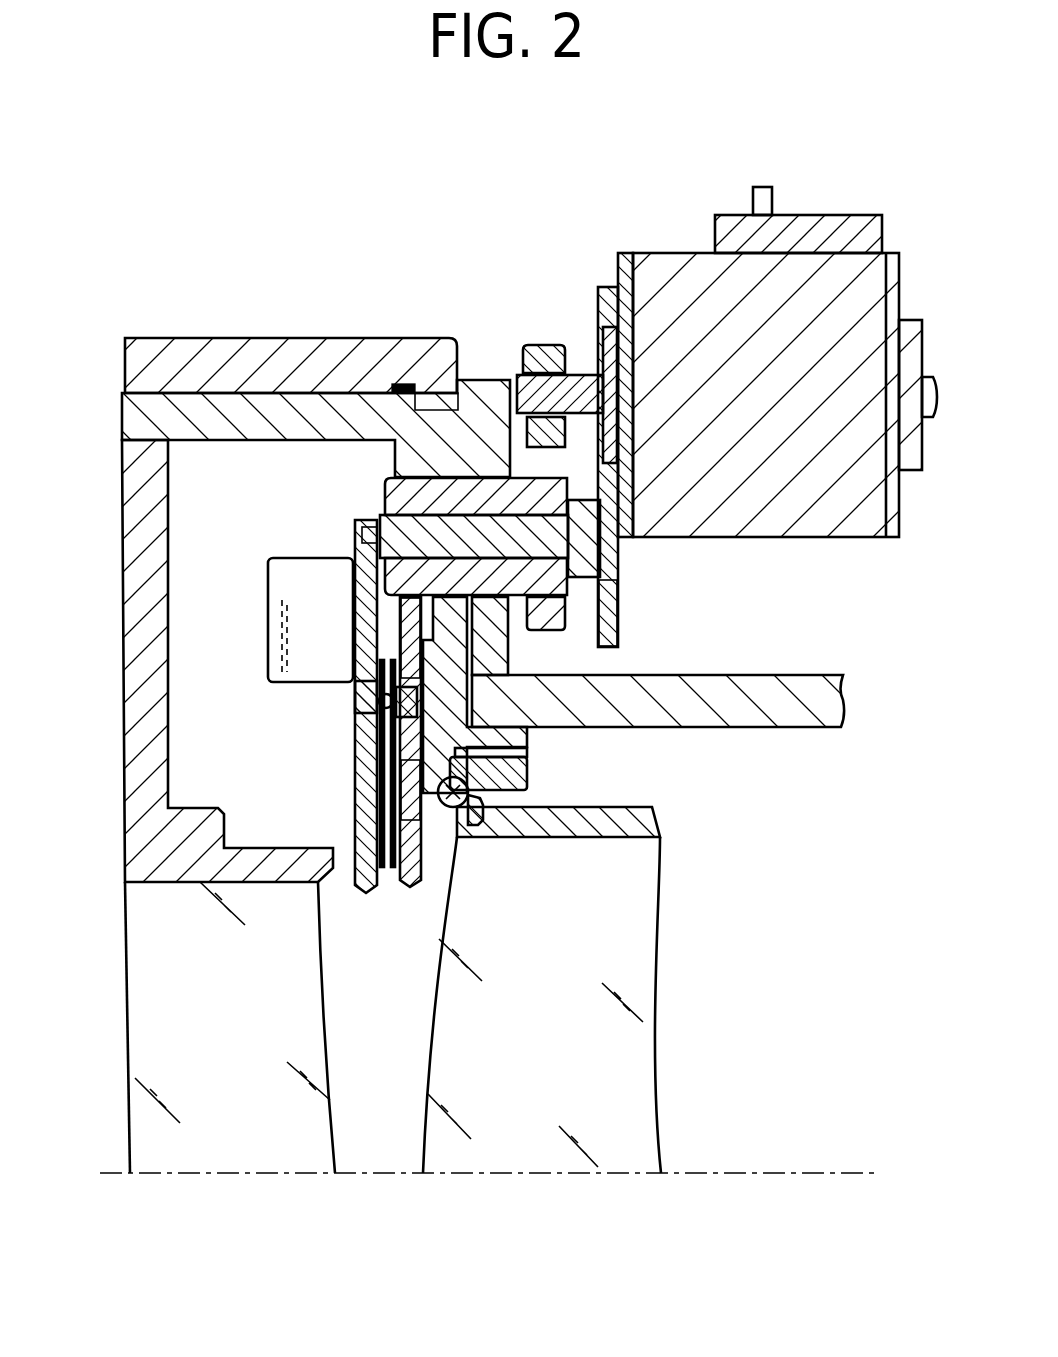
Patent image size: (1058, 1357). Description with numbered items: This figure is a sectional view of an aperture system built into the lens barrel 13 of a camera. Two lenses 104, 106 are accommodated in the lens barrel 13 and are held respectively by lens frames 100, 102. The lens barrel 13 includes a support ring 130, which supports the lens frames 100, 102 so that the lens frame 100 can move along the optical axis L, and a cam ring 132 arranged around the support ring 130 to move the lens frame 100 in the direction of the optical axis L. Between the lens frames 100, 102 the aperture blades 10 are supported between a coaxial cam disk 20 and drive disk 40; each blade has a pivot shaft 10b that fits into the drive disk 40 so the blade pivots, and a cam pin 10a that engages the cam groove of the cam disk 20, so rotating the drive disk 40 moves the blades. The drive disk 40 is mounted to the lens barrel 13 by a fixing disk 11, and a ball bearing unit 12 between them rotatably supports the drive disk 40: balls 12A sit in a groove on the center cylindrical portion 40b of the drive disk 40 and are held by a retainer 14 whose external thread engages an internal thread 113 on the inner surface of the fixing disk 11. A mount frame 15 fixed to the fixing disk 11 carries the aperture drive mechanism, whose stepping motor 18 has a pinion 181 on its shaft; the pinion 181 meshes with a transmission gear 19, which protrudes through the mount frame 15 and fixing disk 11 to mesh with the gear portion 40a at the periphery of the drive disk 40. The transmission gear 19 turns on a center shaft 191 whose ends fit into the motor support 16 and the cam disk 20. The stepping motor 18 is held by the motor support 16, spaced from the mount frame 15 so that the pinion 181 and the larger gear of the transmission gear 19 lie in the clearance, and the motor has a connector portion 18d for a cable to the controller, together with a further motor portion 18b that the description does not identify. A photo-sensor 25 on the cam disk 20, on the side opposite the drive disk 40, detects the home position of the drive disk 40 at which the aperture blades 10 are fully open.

The lens barrel 13 is at (325, 262).
The support ring 130 is at (225, 415).
The cam ring 132 is at (330, 375).
The lens frame 100 is at (148, 836).
The lens 104 is at (145, 996).
The lens 106 is at (640, 1052).
The lens frame 102 is at (640, 828).
The optical axis L is at (404, 1176).
The photo-sensor 25 is at (305, 557).
The cam disk 20 is at (358, 816).
The aperture blades 10 is at (360, 888).
The cam pin 10a is at (357, 700).
The pivot shaft 10b is at (375, 756).
The drive disk 40 is at (435, 850).
The gear portion 40a is at (407, 637).
The center cylindrical portion 40b is at (477, 803).
The center shaft 191 is at (620, 555).
The fixing disk 11 is at (455, 647).
The mount frame 15 is at (760, 690).
The internal thread 113 is at (553, 724).
The retainer 14 is at (533, 775).
The ball bearing unit 12 is at (618, 768).
The balls 12A is at (462, 812).
The motor support 16 is at (607, 290).
The transmission gear 19 is at (620, 618).
The pinion 181 is at (545, 345).
The stepping motor 18 is at (760, 344).
The motor flange 18b is at (625, 253).
The connector portion 18d is at (798, 202).